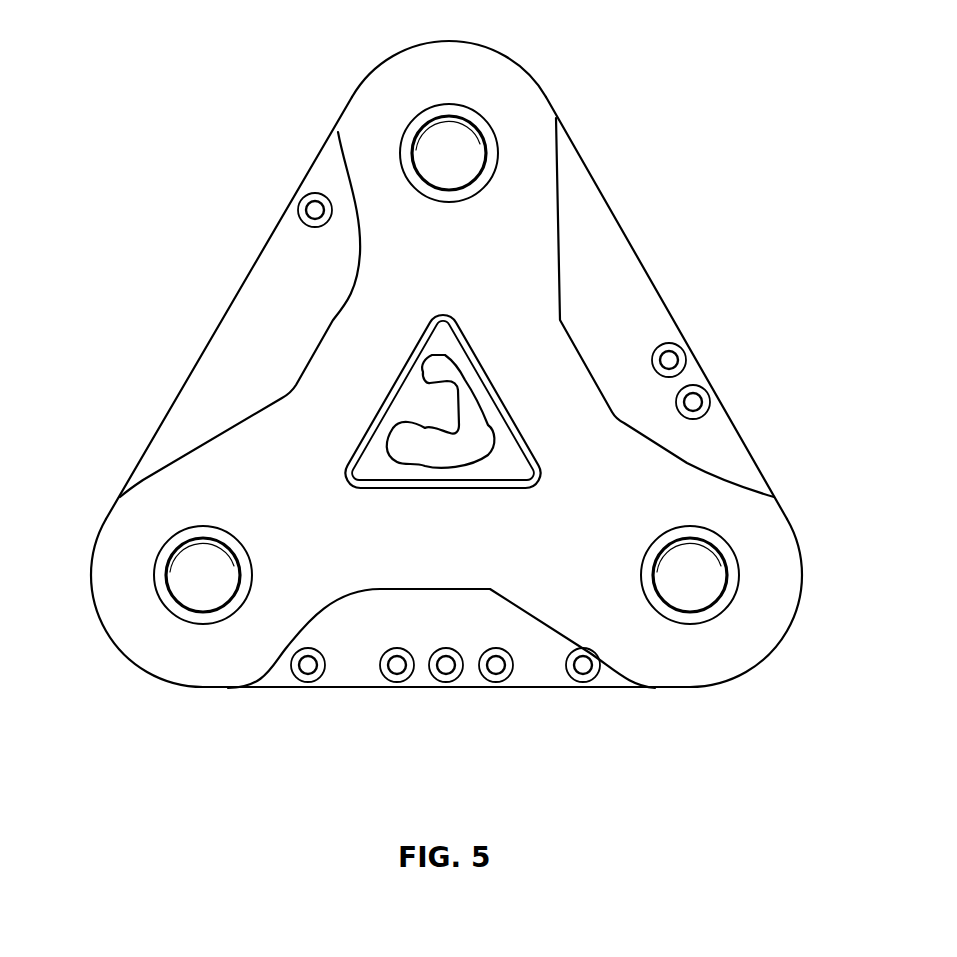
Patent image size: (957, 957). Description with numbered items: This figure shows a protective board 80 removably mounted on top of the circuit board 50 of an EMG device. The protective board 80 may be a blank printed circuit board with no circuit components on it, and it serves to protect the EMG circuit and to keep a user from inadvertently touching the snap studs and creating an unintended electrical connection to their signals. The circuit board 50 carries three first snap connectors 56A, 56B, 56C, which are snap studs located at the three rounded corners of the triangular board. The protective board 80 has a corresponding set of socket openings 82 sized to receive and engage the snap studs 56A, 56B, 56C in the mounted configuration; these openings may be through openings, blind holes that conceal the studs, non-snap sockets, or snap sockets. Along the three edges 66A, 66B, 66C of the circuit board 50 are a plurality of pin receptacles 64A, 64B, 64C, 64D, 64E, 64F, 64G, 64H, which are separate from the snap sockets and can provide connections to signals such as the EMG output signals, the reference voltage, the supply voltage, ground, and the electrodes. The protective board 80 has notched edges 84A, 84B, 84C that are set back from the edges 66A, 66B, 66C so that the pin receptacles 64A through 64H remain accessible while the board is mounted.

The circuit board 50 is at (185, 227).
The protective board 80 is at (366, 76).
The socket openings 82 is at (487, 123).
The first snap connector 56A is at (449, 138).
The first snap connector 56B is at (187, 575).
The first snap connector 56C is at (700, 595).
The pin receptacle 64A is at (713, 401).
The pin receptacle 64B is at (688, 360).
The pin receptacle 64C is at (299, 202).
The pin receptacle 64D is at (585, 684).
The pin receptacle 64E is at (497, 684).
The pin receptacle 64F is at (447, 684).
The pin receptacle 64G is at (396, 684).
The pin receptacle 64H is at (307, 684).
The edge 66A is at (631, 215).
The edge 66B is at (166, 385).
The edge 66C is at (331, 700).
The notched edge 84A is at (571, 364).
The notched edge 84B is at (350, 321).
The notched edge 84C is at (419, 562).